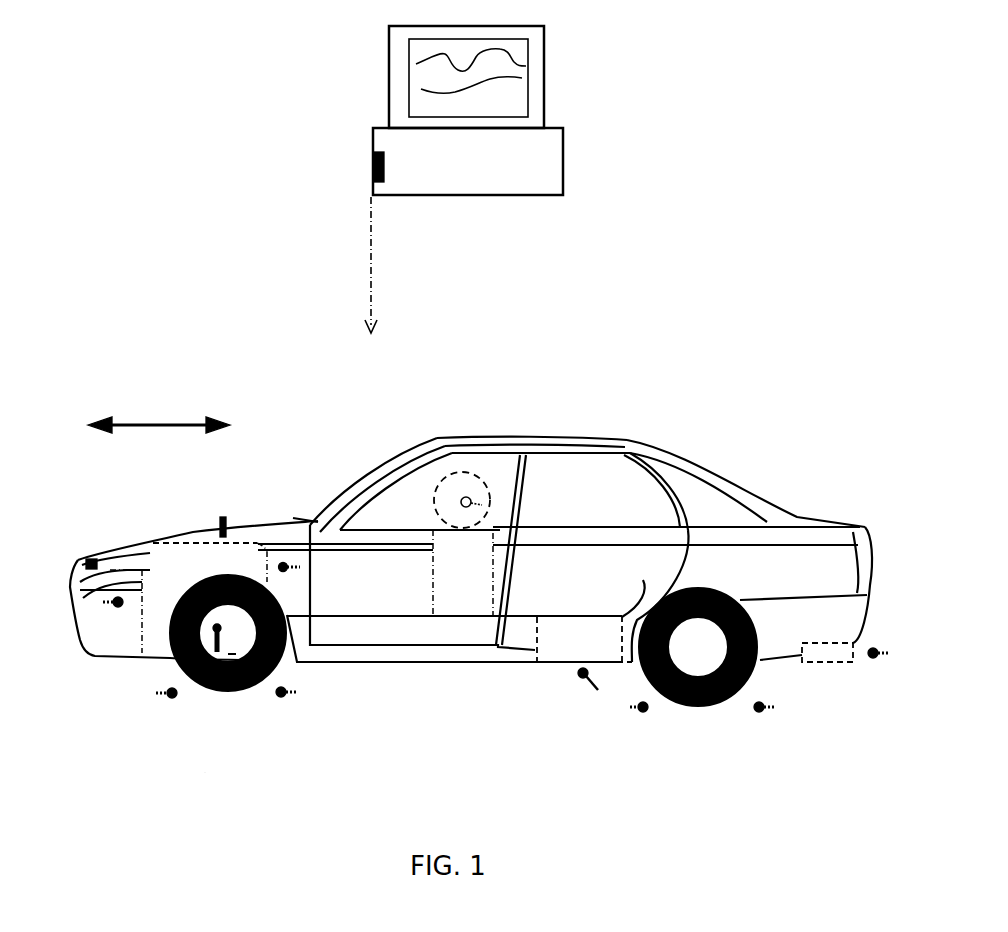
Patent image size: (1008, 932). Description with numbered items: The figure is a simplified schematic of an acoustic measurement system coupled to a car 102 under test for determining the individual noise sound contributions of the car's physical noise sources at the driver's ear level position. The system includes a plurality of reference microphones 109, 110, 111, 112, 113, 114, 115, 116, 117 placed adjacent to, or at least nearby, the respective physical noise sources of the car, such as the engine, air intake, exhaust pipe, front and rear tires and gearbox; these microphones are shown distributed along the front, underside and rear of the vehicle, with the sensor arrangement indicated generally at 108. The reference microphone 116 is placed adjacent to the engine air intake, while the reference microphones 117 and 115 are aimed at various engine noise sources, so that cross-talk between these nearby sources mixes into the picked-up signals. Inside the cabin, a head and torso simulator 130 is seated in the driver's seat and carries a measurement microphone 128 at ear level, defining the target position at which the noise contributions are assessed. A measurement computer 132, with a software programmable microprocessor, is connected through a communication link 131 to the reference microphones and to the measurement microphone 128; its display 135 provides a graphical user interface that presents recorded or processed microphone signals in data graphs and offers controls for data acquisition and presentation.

The car 102 is at (375, 466).
The sensor system 108 is at (205, 772).
The reference microphone 109 is at (873, 662).
The reference microphone 110 is at (760, 715).
The reference microphone 111 is at (640, 715).
The reference microphone 112 is at (582, 685).
The reference microphone 113 is at (284, 700).
The reference microphone 114 is at (169, 702).
The reference microphone 115 is at (112, 610).
The reference microphone 116 is at (92, 557).
The reference microphone 117 is at (222, 518).
The measurement microphone 128 is at (482, 503).
The head and torso simulator 130 is at (471, 471).
The communication link 131 is at (360, 264).
The measurement computer 132 is at (583, 140).
The display 135 is at (536, 76).